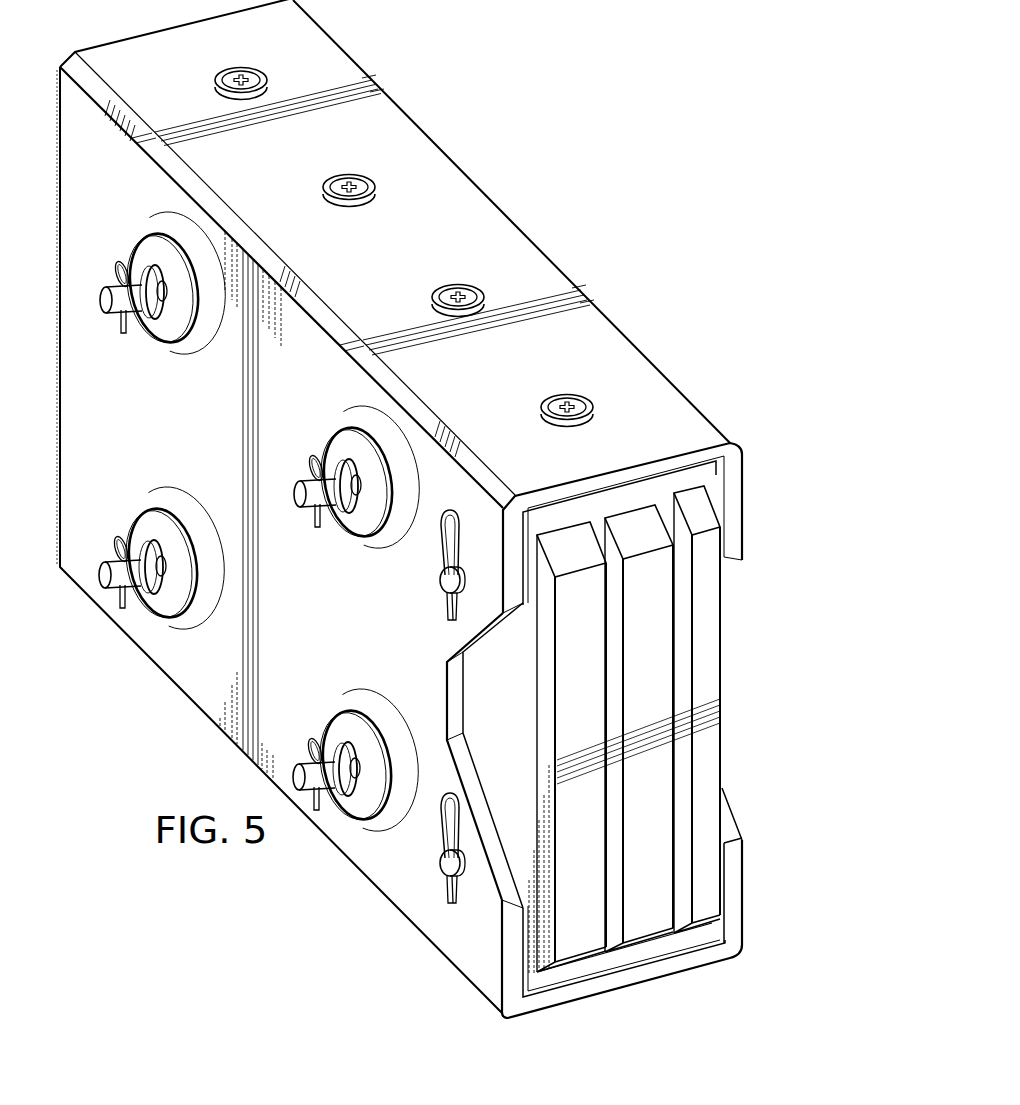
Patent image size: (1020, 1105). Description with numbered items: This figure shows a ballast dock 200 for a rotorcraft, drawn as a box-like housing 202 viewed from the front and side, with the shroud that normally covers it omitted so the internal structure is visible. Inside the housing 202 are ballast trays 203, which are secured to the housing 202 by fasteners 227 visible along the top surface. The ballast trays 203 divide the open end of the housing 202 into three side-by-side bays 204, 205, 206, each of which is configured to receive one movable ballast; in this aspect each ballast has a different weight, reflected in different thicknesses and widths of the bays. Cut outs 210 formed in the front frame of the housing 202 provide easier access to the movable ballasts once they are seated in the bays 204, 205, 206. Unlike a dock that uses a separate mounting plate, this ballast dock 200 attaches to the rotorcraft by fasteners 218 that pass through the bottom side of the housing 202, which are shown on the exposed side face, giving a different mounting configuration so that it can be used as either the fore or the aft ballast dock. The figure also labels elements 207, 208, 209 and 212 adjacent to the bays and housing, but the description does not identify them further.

The ballast dock 200 is at (573, 70).
The housing 202 is at (527, 240).
The ballast trays 203 is at (660, 492).
The bay 204 is at (563, 966).
The bay 205 is at (628, 947).
The bay 206 is at (688, 940).
The first partition rib 207 is at (593, 774).
The second partition rib 208 is at (662, 683).
The third partition rib 209 is at (712, 605).
The cut outs 210 is at (453, 680).
The cable tie clip 212 is at (440, 588).
The fasteners 218 is at (120, 283).
The fasteners 227 is at (244, 68).